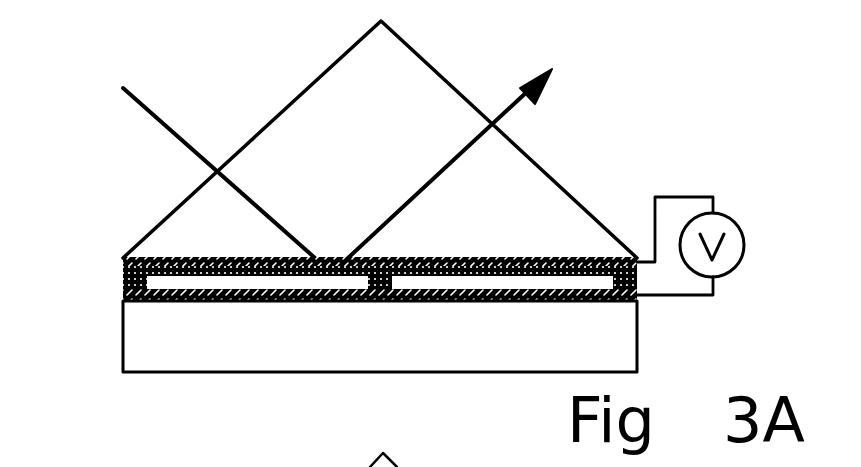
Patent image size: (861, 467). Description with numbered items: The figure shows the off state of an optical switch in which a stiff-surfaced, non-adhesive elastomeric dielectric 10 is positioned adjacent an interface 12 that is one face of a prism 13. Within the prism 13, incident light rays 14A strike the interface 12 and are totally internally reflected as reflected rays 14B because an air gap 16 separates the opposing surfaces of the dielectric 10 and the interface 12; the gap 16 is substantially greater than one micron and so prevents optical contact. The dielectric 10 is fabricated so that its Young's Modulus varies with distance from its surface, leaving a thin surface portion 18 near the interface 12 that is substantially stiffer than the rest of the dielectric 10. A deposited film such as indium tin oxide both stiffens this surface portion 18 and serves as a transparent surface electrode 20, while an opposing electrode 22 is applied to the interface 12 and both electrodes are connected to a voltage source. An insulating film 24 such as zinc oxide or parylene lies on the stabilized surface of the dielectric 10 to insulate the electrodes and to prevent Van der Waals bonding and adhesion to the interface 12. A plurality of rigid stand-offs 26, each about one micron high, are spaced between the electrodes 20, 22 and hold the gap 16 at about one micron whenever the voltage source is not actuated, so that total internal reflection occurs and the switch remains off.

The elastomeric dielectric 10 is at (378, 360).
The interface 12 is at (430, 278).
The prism 13 is at (320, 77).
The incident light rays 14A is at (146, 100).
The reflected light rays 14B is at (515, 107).
The air gap 16 is at (207, 300).
The stiffened surface portion 18 is at (500, 300).
The transparent surface electrode 20 is at (123, 303).
The opposing electrode 22 is at (573, 258).
The insulating film 24 is at (175, 260).
The stand-offs 26 is at (123, 282).